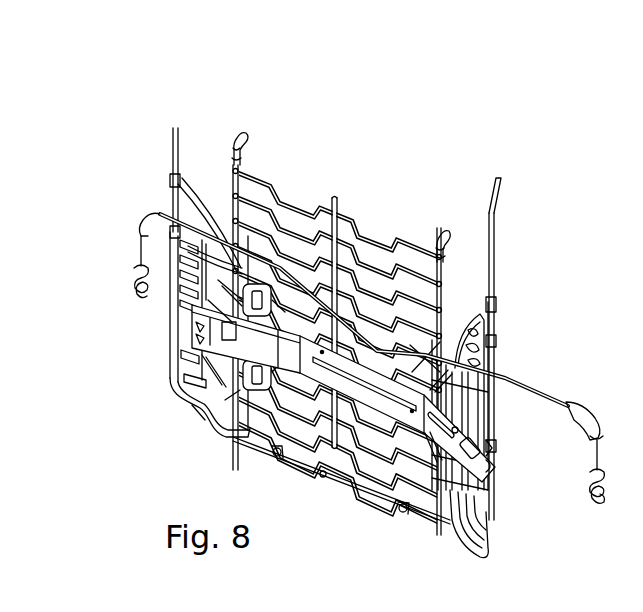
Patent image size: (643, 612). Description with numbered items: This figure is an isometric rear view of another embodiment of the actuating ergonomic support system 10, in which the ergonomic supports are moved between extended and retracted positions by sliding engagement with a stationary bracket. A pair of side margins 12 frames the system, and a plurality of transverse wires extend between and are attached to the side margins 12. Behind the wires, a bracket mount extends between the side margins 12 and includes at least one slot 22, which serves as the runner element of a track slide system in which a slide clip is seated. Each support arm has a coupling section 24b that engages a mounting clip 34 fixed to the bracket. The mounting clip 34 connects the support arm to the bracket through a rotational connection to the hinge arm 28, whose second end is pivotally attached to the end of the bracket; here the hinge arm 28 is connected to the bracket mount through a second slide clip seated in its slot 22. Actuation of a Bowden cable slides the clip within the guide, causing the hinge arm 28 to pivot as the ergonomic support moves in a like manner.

The actuating ergonomic support system 10 is at (335, 158).
The side margins 12 is at (235, 127).
The slot 22 is at (424, 433).
The coupling section 24b is at (192, 401).
The hinge arm 28 is at (196, 345).
The mounting clip 34 is at (256, 375).